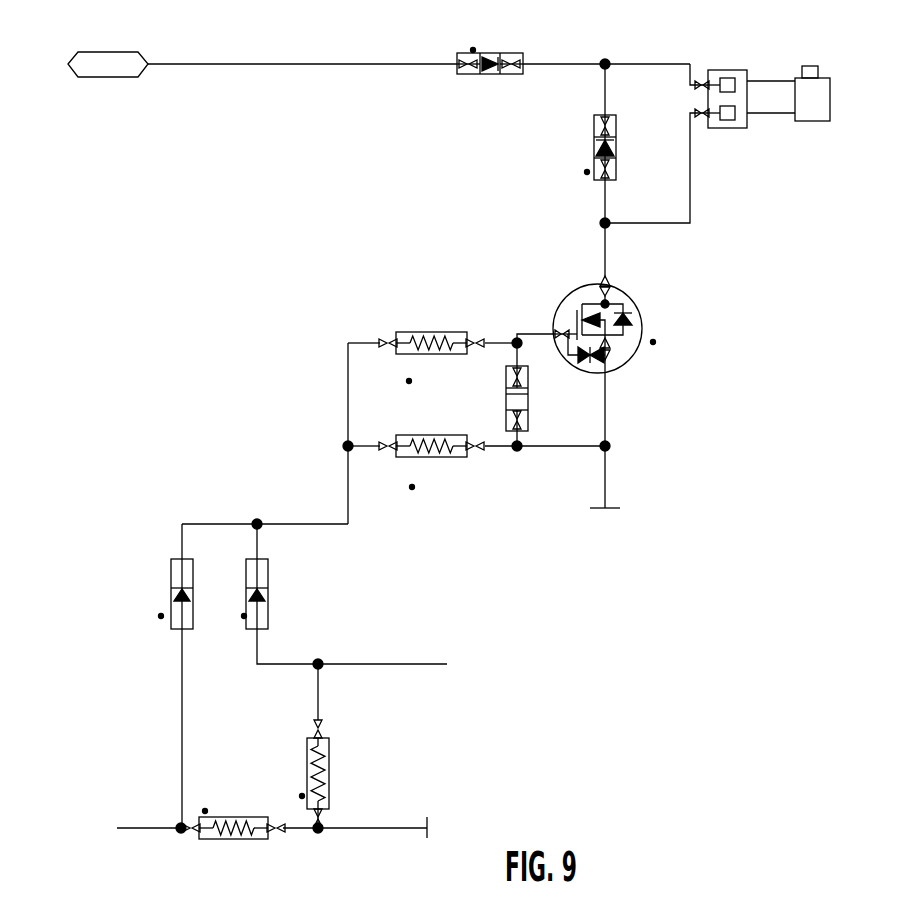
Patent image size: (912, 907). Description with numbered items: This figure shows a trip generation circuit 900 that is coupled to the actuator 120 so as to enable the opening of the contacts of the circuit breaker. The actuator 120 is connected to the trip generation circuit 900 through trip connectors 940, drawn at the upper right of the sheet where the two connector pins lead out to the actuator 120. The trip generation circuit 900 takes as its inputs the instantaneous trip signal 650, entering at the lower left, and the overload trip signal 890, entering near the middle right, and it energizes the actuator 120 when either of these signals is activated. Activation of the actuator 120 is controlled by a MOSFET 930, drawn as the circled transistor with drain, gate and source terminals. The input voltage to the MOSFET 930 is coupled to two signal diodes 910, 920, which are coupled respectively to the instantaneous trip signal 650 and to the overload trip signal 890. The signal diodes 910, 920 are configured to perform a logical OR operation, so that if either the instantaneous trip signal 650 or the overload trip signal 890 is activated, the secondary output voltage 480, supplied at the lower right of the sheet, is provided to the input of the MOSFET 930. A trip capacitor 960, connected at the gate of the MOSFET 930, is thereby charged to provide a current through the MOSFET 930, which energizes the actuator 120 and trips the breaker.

The trip generation circuit 900 is at (203, 316).
The signal diode 910 is at (171, 570).
The signal diode 920 is at (269, 602).
The MOSFET 930 is at (637, 298).
The trip connectors 940 is at (735, 70).
The trip capacitor 960 is at (526, 404).
The actuator 120 is at (808, 128).
The instantaneous trip signal 650 is at (122, 833).
The overload trip signal 890 is at (447, 666).
The secondary output voltage 480 is at (427, 840).